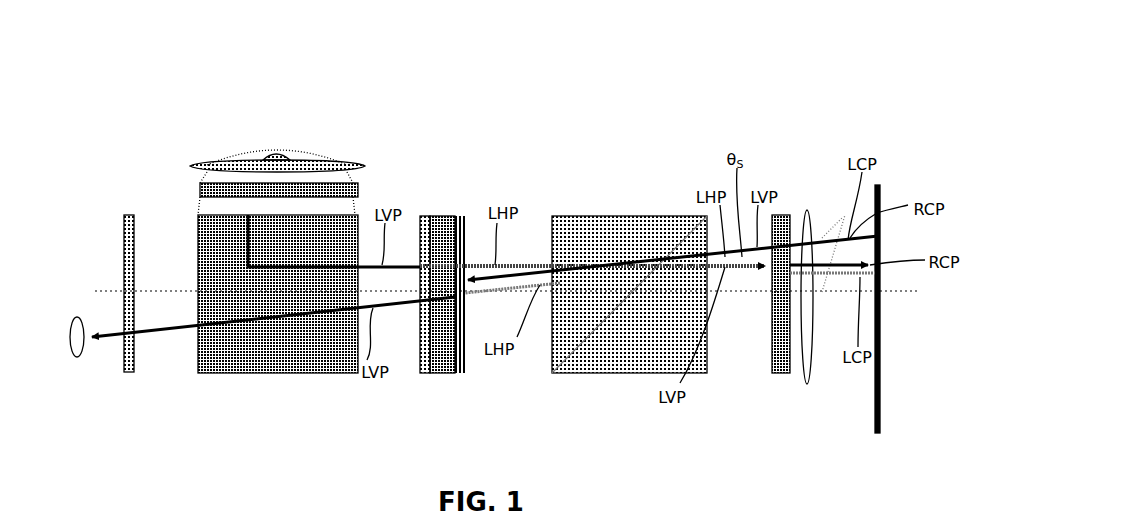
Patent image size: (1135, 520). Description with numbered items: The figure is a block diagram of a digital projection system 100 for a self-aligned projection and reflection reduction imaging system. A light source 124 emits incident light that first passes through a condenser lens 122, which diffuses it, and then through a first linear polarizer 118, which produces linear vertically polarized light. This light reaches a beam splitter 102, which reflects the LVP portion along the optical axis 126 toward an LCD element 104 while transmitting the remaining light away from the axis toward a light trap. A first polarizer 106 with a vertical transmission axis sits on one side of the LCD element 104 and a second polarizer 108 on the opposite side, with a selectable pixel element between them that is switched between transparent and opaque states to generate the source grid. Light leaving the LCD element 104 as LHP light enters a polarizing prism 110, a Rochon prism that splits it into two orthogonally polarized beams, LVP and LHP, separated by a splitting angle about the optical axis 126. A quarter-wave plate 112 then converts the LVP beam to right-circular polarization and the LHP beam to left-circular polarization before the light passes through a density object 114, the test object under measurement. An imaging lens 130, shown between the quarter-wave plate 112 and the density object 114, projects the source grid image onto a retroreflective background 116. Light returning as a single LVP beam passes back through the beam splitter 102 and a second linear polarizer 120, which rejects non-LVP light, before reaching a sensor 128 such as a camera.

The digital projection system 100 is at (408, 80).
The beam splitter 102 is at (288, 375).
The LCD element 104 is at (443, 217).
The first polarizer 106 is at (422, 365).
The second polarizer 108 is at (458, 373).
The polarizing prism 110 is at (622, 216).
The quarter-wave plate 112 is at (772, 375).
The density object 114 is at (835, 208).
The retroreflective background 116 is at (875, 427).
The first linear polarizer 118 is at (200, 187).
The second linear polarizer 120 is at (125, 368).
The condenser lens 122 is at (347, 163).
The light source 124 is at (263, 152).
The optical axis 126 is at (111, 290).
The sensor 128 is at (70, 357).
The imaging lens 130 is at (810, 363).